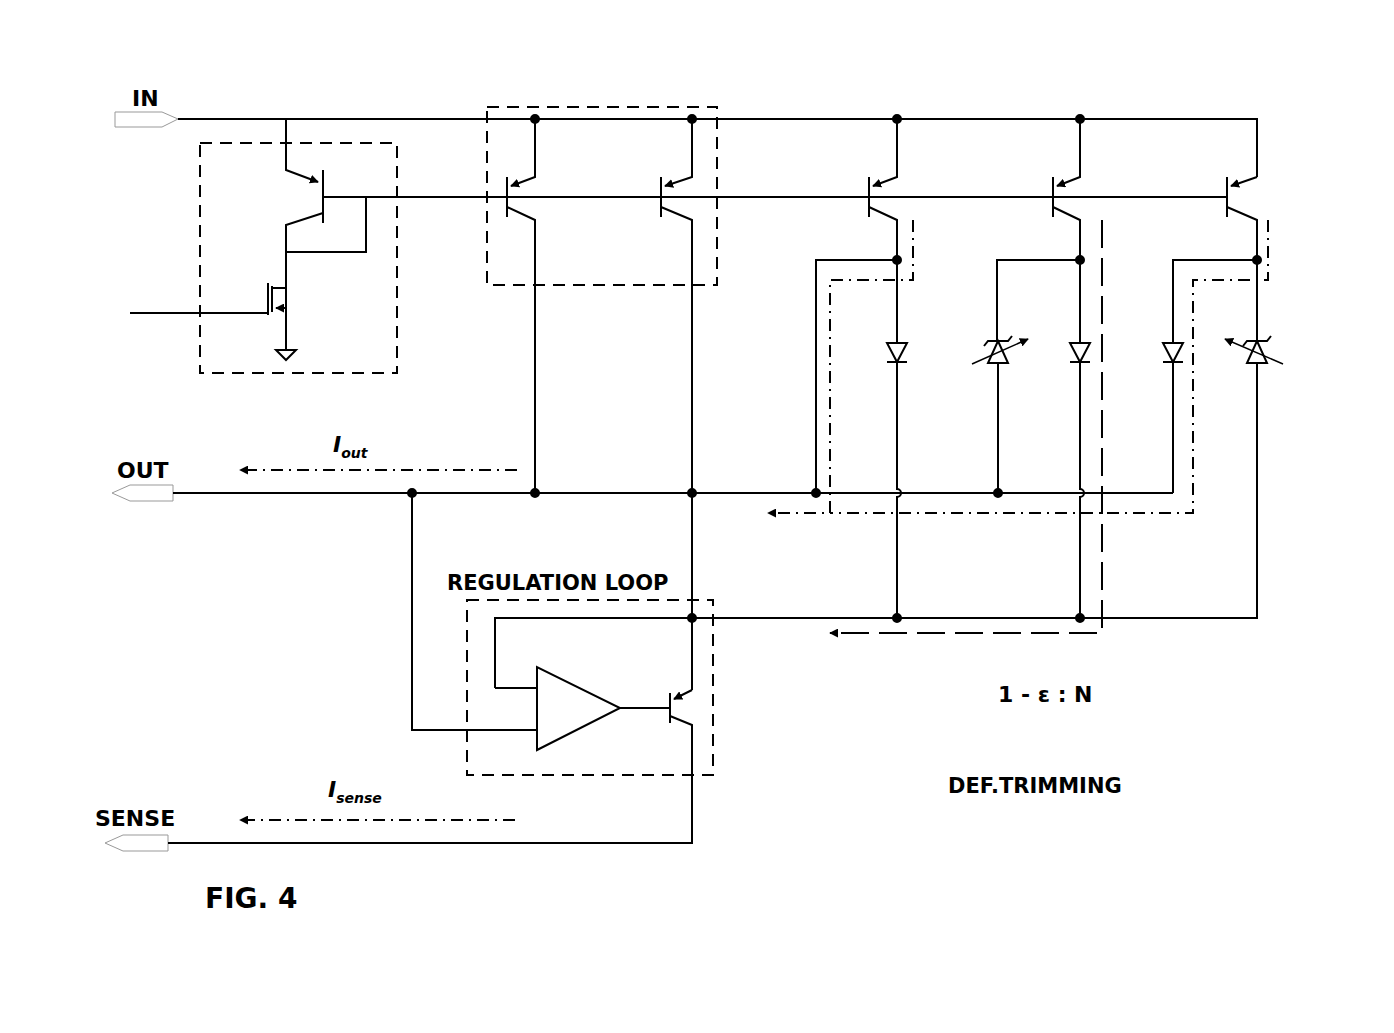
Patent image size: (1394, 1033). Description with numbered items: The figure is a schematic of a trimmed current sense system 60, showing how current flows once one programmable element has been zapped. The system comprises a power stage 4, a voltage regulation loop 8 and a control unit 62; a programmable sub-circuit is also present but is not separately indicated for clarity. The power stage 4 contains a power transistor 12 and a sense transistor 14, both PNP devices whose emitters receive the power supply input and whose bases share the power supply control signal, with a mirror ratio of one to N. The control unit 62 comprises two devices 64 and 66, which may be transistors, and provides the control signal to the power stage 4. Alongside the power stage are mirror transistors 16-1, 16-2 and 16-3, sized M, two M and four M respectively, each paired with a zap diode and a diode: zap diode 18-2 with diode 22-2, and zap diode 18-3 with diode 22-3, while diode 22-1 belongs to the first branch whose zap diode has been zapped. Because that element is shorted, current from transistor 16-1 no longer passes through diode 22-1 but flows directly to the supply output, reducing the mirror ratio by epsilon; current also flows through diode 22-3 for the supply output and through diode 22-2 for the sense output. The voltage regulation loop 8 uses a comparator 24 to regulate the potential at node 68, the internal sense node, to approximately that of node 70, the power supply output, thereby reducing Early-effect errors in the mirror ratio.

The power stage 4 is at (697, 107).
The voltage regulation loop 8 is at (713, 700).
The power transistor 12 is at (541, 234).
The sense transistor 14 is at (671, 166).
The transistor 16-1 is at (866, 169).
The transistor 16-2 is at (1059, 163).
The transistor 16-3 is at (1239, 167).
The zap diode 18-2 is at (990, 371).
The zap diode 18-3 is at (1269, 373).
The diode 22-1 is at (903, 327).
The diode 22-2 is at (1073, 331).
The diode 22-3 is at (1170, 373).
The comparator 24 is at (575, 681).
The current sense system 60 is at (1312, 120).
The control unit 62 is at (293, 246).
The device 64 is at (297, 184).
The device 66 is at (272, 273).
The node 68 is at (703, 609).
The node 70 is at (405, 506).